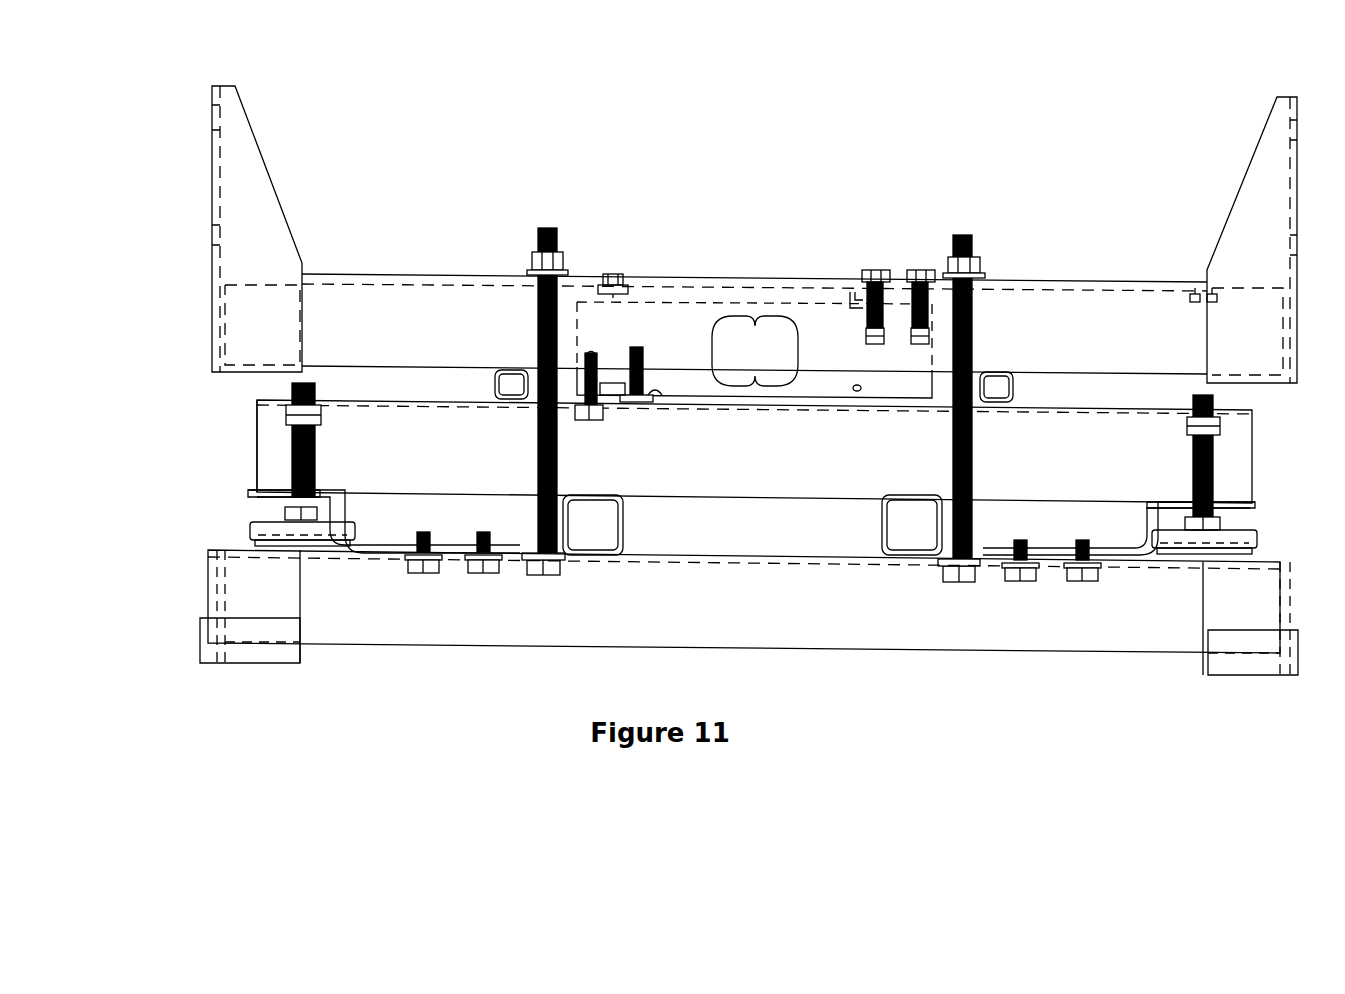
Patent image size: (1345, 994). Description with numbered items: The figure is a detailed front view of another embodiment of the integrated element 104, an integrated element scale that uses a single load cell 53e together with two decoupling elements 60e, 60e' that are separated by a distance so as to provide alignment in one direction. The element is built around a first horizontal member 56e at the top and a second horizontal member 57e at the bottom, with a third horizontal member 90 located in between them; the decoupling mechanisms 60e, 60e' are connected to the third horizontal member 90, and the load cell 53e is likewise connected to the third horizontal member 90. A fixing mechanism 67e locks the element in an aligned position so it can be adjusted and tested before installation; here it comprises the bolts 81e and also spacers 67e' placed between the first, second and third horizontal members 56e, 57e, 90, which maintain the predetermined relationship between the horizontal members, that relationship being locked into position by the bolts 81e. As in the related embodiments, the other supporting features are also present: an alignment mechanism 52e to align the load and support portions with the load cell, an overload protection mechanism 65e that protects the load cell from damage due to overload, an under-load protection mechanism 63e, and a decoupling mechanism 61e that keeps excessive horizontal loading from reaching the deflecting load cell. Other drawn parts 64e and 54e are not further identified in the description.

The integrated element 104 is at (767, 148).
The alignment mechanism 52e is at (1228, 225).
The first horizontal member 56e is at (360, 302).
The load cell 53e is at (797, 395).
The middle support member 64e is at (1140, 408).
The overload protection mechanism 65e is at (608, 273).
The bolts 81e is at (557, 235).
The fixing mechanism 67e is at (753, 370).
The spacers 67e' is at (745, 418).
The Z-shaped bracket 54e is at (687, 555).
The under-load protection mechanism 63e is at (280, 488).
The decoupling element 60e is at (221, 451).
The decoupling element 60e' is at (1264, 462).
The decoupling mechanism 61e is at (257, 542).
The third horizontal member 90 is at (257, 407).
The second horizontal member 57e is at (412, 618).